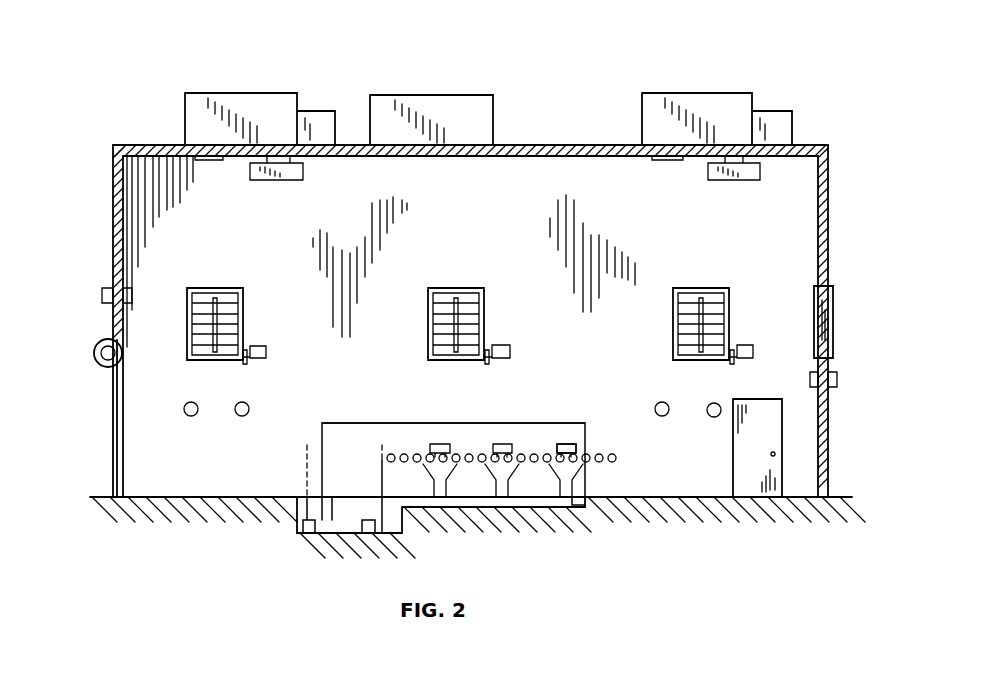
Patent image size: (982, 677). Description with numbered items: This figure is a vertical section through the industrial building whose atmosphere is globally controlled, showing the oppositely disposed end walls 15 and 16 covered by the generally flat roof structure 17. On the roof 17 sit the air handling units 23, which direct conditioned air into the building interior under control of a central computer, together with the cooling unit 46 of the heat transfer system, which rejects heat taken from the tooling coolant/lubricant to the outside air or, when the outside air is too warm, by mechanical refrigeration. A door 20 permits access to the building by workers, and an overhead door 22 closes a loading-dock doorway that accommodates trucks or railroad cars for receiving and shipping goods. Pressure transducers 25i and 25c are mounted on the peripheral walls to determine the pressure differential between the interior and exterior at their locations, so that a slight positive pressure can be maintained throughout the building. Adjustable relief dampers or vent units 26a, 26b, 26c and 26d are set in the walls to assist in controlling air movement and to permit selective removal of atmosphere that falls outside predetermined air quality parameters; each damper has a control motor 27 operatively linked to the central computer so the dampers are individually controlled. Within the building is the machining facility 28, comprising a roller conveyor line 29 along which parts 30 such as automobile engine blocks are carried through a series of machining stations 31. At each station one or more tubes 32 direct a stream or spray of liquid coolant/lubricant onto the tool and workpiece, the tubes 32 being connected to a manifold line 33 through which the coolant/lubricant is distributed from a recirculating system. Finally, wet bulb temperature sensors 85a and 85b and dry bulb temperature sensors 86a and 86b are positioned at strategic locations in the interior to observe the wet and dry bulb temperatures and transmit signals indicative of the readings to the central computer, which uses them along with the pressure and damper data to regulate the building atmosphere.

The end wall 15 is at (113, 210).
The end wall 16 is at (829, 215).
The roof structure 17 is at (552, 145).
The door 20 is at (765, 399).
The overhead door 22 is at (115, 403).
The air handling unit 23 is at (226, 88).
The pressure transducer 25i is at (102, 295).
The pressure transducer 25c is at (837, 382).
The relief damper 26a is at (210, 290).
The relief damper 26b is at (447, 290).
The relief damper 26c is at (688, 290).
The relief damper 26d is at (833, 300).
The control motor 27 is at (263, 346).
The facility 28 is at (574, 396).
The roller conveyor line 29 is at (610, 466).
The part 30 is at (578, 447).
The machining station 31 is at (543, 415).
The tube 32 is at (487, 436).
The manifold line 33 is at (350, 422).
The cooling unit 46 is at (451, 103).
The wet bulb temperature sensor 85a is at (185, 417).
The wet bulb temperature sensor 85b is at (657, 402).
The dry bulb temperature sensor 86a is at (243, 417).
The dry bulb temperature sensor 86b is at (711, 418).